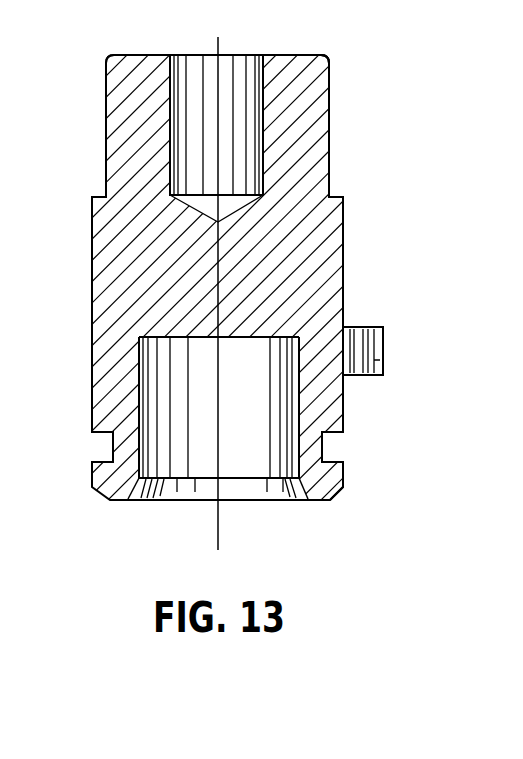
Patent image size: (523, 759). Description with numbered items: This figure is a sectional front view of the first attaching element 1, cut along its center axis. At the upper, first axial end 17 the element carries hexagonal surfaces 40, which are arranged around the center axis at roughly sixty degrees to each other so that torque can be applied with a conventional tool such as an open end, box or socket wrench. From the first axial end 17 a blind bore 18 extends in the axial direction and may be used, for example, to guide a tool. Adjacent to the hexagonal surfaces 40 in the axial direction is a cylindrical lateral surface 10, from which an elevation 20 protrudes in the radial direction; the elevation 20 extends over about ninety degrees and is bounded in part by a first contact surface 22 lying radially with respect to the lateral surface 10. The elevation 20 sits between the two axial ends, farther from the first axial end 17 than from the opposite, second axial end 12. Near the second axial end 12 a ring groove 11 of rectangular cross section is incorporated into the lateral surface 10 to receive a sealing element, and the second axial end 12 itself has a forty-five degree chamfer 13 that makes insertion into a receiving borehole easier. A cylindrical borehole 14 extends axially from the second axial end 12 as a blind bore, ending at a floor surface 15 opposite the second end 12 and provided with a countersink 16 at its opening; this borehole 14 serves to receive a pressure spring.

The first attaching element 1 is at (82, 45).
The cylindrical lateral surface 10 is at (92, 296).
The hexagonal surfaces 40 is at (106, 143).
The first axial end 17 is at (304, 55).
The blind bore 18 is at (233, 70).
The floor surface 15 is at (248, 339).
The cylindrical borehole 14 is at (262, 438).
The countersink 16 is at (168, 502).
The second axial end 12 is at (258, 502).
The chamfer 13 is at (338, 494).
The ring groove 11 is at (328, 458).
The elevation 20 is at (388, 318).
The first contact surface 22 is at (383, 356).